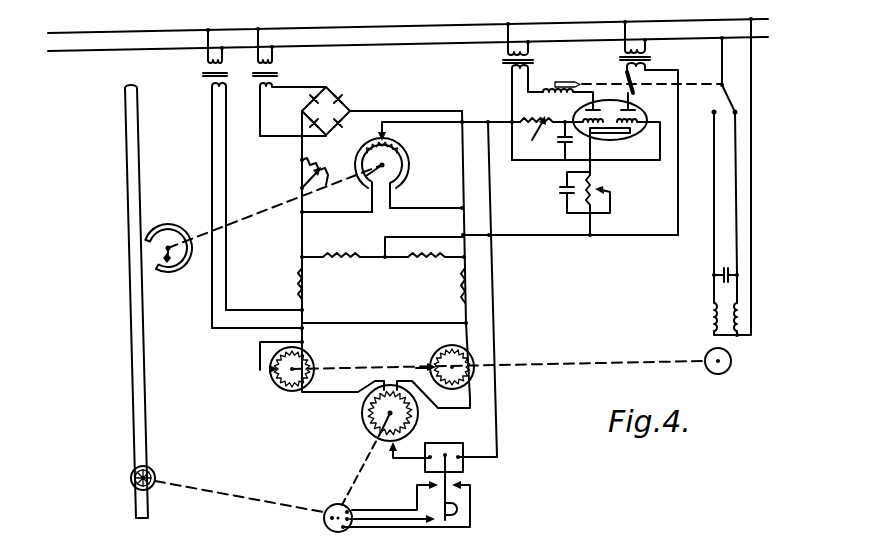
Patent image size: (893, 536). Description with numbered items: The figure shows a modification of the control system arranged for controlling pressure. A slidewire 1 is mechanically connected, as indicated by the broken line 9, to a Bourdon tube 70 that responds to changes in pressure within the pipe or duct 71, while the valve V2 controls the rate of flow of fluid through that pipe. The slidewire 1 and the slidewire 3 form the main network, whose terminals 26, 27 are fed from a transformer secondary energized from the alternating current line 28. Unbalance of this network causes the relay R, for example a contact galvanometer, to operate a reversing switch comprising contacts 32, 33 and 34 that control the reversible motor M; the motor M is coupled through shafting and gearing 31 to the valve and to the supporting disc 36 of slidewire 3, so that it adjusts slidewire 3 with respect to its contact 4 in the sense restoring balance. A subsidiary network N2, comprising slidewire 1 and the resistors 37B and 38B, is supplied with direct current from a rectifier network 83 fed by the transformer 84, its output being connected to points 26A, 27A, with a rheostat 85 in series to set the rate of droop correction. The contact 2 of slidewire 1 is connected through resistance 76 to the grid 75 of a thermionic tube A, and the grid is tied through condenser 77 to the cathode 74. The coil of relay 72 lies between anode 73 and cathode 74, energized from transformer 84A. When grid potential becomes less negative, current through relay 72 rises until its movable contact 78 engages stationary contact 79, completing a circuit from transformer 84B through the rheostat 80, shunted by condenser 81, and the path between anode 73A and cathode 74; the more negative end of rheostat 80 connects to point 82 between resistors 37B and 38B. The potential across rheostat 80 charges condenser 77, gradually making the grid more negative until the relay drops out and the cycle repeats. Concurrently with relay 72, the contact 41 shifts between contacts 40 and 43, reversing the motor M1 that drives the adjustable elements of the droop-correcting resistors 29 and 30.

The alternating current line 28 is at (380, 29).
The transformer 84 is at (275, 74).
The transformer 84A is at (507, 61).
The transformer 84B is at (648, 59).
The rectifier network 83 is at (351, 110).
The rheostat 85 is at (315, 167).
The slidewire 1 is at (404, 150).
The contact 2 is at (385, 126).
The mechanical connection 9 is at (275, 210).
The Bourdon tube 70 is at (172, 226).
The pipe or duct 71 is at (138, 187).
The valve V2 is at (152, 476).
The terminal of network N 26 is at (302, 308).
The point of the network 26A is at (302, 214).
The terminal of network N 27 is at (466, 323).
The point of the network 27A is at (462, 208).
The network N2 is at (263, 259).
The resistor 37B is at (340, 262).
The resistor 38B is at (432, 260).
The point 82 is at (420, 268).
The droop-correcting resistor 29 is at (289, 392).
The droop-correcting resistor 30 is at (442, 355).
The shafting and gearing 31 is at (370, 367).
The slidewire 3 is at (362, 415).
The supporting disc 36 is at (416, 421).
The contact 4 is at (390, 450).
The relay R is at (463, 465).
The contact 32 is at (441, 493).
The contact 33 is at (425, 487).
The contact 34 is at (472, 493).
The reversible motor M is at (334, 508).
The motor M1 is at (726, 369).
The relay 72 is at (549, 88).
The anode 73 is at (593, 94).
The anode 73A is at (637, 104).
The cathode 74 is at (616, 132).
The grid 75 is at (585, 118).
The resistance 76 is at (536, 133).
The condenser 77 is at (561, 148).
The movable contact 78 is at (652, 92).
The stationary contact 79 is at (627, 78).
The rheostat 80 is at (612, 190).
The condenser 81 is at (563, 194).
The thermionic tube A is at (633, 131).
The contact 40 is at (738, 113).
The contact 41 is at (722, 100).
The contact 43 is at (711, 114).